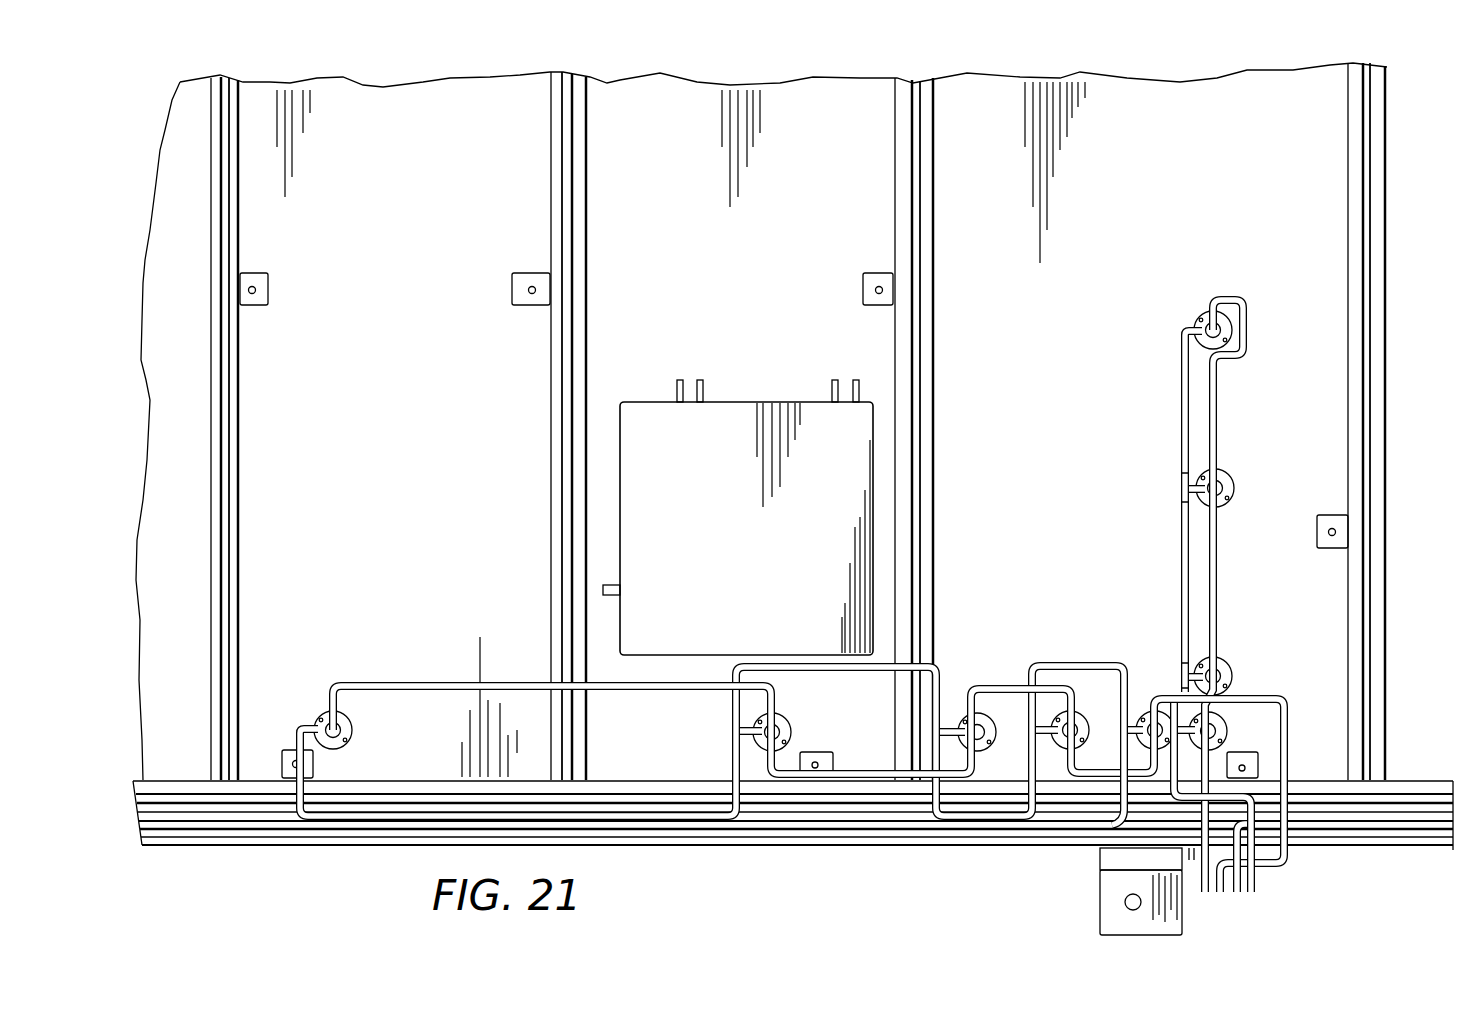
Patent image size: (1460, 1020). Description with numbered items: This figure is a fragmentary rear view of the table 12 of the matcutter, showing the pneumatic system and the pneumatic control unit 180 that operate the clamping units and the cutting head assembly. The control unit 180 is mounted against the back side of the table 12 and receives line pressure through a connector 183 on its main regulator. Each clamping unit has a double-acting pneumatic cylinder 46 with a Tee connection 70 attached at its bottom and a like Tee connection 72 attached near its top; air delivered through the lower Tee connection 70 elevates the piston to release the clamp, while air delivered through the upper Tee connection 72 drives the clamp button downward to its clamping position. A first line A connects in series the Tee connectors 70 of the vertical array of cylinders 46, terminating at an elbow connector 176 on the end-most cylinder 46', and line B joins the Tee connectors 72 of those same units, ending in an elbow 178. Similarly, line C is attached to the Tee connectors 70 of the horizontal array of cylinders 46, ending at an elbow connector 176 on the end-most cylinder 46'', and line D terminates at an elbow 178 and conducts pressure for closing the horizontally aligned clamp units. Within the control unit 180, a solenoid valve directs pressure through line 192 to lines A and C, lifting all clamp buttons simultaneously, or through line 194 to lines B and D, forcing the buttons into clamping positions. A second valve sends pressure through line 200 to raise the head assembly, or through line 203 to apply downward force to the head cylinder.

The table 12 is at (1393, 231).
The double-acting pneumatic cylinder 46 is at (1237, 582).
The end-most cylinder 46' is at (1184, 301).
The end-most cylinder 46'' is at (367, 729).
The Tee connection 70 is at (786, 727).
The Tee connection 72 is at (1187, 487).
The elbow connector 176 is at (329, 708).
The elbow 178 is at (298, 724).
The pneumatic control unit 180 is at (870, 471).
The connector 183 is at (608, 587).
The line 192 is at (678, 390).
The line 194 is at (700, 388).
The line 200 is at (830, 382).
The line 203 is at (855, 382).
The first line A is at (1288, 700).
The line B is at (1250, 797).
The line C is at (1204, 891).
The line D is at (1120, 816).